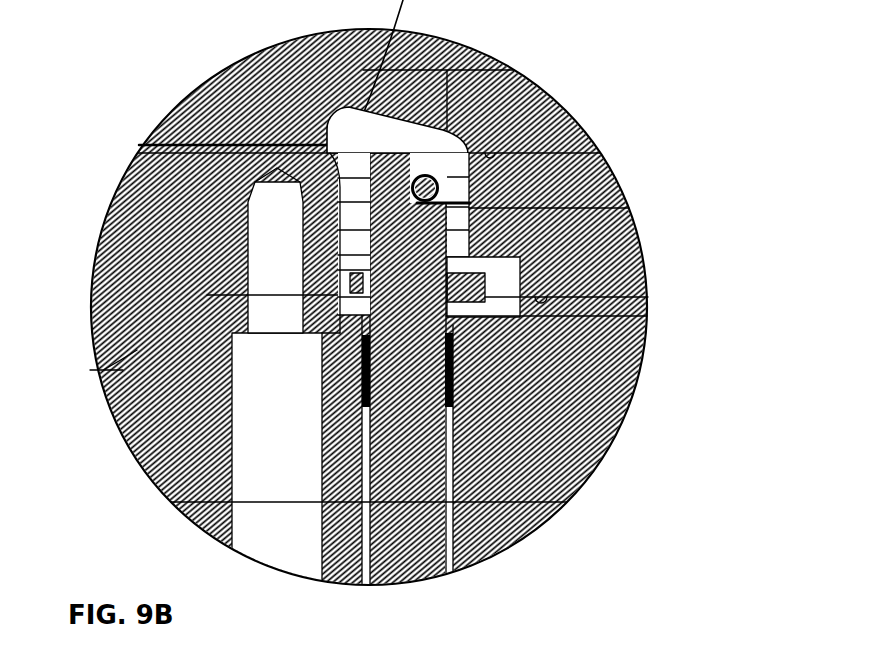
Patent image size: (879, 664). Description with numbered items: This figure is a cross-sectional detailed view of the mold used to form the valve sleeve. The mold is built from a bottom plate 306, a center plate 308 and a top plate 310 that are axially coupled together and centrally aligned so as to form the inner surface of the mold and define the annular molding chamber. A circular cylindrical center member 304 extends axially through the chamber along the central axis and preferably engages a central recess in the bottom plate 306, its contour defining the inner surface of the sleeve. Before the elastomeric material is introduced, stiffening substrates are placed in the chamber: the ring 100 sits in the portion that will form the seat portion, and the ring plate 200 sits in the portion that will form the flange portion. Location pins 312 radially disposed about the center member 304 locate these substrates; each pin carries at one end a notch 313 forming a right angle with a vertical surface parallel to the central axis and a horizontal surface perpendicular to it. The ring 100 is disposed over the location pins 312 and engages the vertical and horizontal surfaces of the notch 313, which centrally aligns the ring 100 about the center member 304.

The ring 100 is at (443, 174).
The ring plate 200 is at (460, 290).
The center member 304 is at (98, 243).
The bottom plate 306 is at (628, 408).
The center plate 308 is at (639, 230).
The top plate 310 is at (204, 82).
The location pins 312 is at (407, 417).
The notch 313 is at (408, 187).